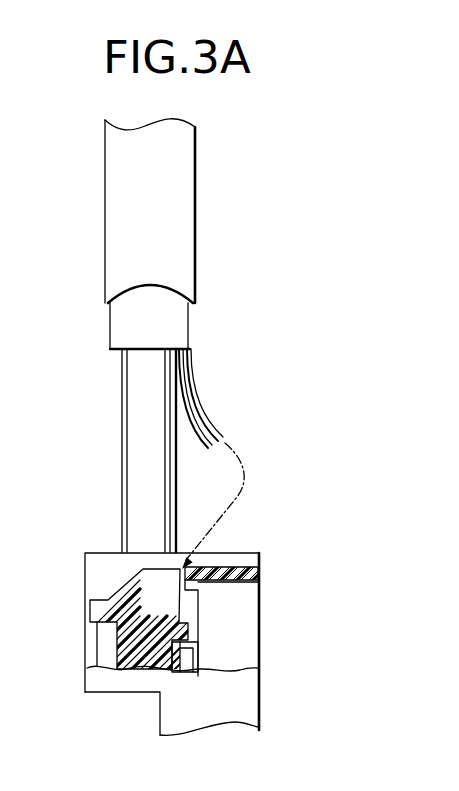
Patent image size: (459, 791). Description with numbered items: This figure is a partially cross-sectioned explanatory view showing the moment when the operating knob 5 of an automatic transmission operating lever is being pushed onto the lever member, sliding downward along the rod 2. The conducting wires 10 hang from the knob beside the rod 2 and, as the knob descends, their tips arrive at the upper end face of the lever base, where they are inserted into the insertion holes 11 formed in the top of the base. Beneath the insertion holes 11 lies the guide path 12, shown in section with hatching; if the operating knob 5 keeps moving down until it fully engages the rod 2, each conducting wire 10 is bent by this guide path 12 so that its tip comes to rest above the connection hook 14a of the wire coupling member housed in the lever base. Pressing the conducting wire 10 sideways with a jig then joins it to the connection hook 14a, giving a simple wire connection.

The operating knob 5 is at (210, 162).
The rod 2 is at (118, 422).
The conducting wires 10 is at (192, 394).
The insertion holes 11 is at (230, 557).
The guide path 12 is at (180, 607).
The connection hook 14a is at (200, 645).